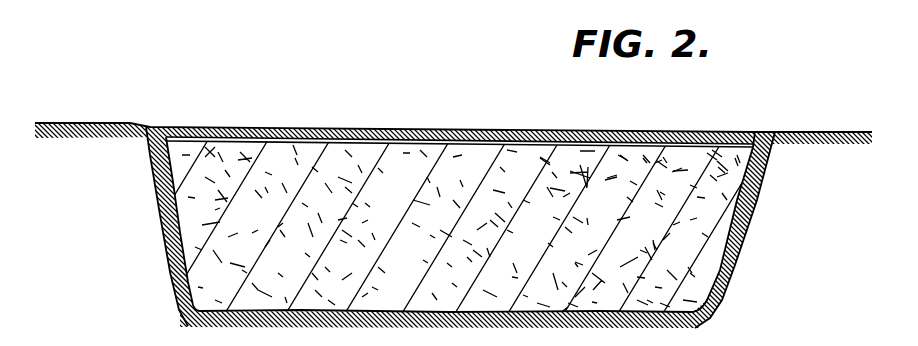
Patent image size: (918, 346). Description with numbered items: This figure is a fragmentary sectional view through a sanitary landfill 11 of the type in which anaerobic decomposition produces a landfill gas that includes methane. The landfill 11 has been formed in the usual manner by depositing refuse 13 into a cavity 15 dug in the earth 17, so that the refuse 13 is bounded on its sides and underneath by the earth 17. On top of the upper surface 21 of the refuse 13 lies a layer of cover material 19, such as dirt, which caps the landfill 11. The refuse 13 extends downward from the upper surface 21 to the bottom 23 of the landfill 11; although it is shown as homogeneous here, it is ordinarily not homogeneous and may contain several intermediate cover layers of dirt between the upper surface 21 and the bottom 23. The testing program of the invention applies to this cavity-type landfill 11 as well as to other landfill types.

The sanitary landfill 11 is at (258, 150).
The refuse 13 is at (482, 160).
The cavity 15 is at (727, 239).
The earth 17 is at (777, 131).
The layer of cover material 19 is at (345, 132).
The upper surface 21 is at (683, 146).
The bottom 23 is at (406, 310).